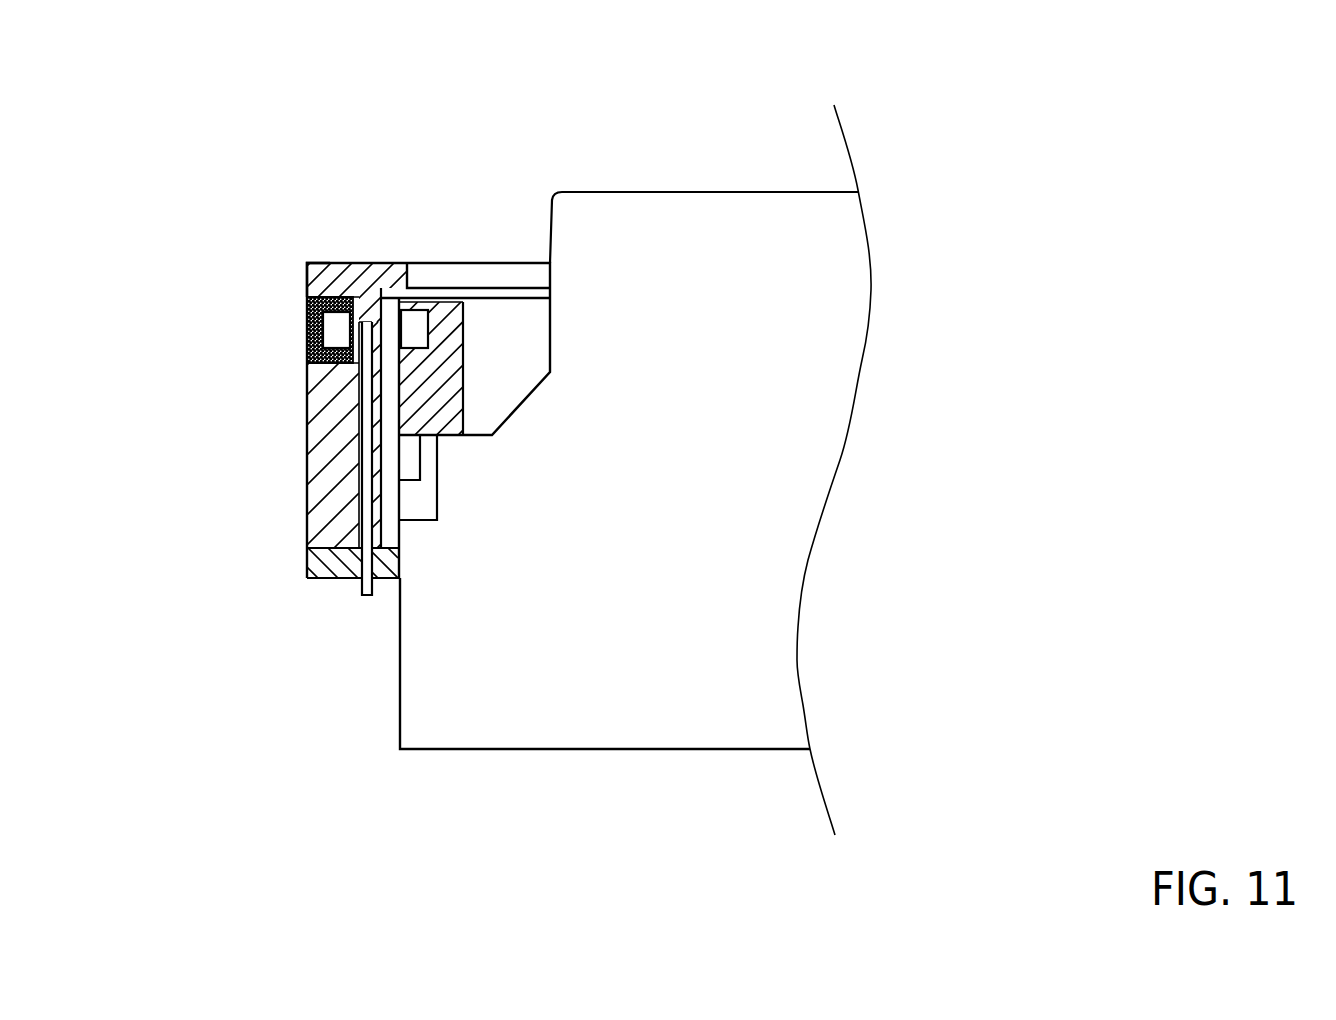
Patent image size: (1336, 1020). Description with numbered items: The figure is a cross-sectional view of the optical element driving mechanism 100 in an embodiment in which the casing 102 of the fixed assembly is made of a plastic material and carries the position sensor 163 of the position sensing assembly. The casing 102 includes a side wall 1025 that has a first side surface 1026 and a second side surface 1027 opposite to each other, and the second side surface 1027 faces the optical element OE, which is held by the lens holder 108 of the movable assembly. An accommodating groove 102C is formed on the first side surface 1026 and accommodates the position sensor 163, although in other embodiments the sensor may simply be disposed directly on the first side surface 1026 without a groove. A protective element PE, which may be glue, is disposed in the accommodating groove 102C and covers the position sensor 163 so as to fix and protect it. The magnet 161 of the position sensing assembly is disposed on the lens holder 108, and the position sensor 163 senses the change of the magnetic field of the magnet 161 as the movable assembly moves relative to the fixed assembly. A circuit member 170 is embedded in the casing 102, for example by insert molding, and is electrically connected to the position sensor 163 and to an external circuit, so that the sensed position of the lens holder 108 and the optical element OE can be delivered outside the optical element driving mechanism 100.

The optical element driving mechanism 100 is at (155, 47).
The casing 102 is at (303, 259).
The accommodating groove 102C is at (307, 281).
The side wall 1025 is at (348, 278).
The first side surface 1026 is at (307, 469).
The second side surface 1027 is at (437, 297).
The magnet 161 is at (415, 331).
The position sensor 163 is at (307, 332).
The protective element PE is at (340, 330).
The lens holder 108 is at (432, 385).
The circuit member 170 is at (364, 596).
The optical element OE is at (708, 258).